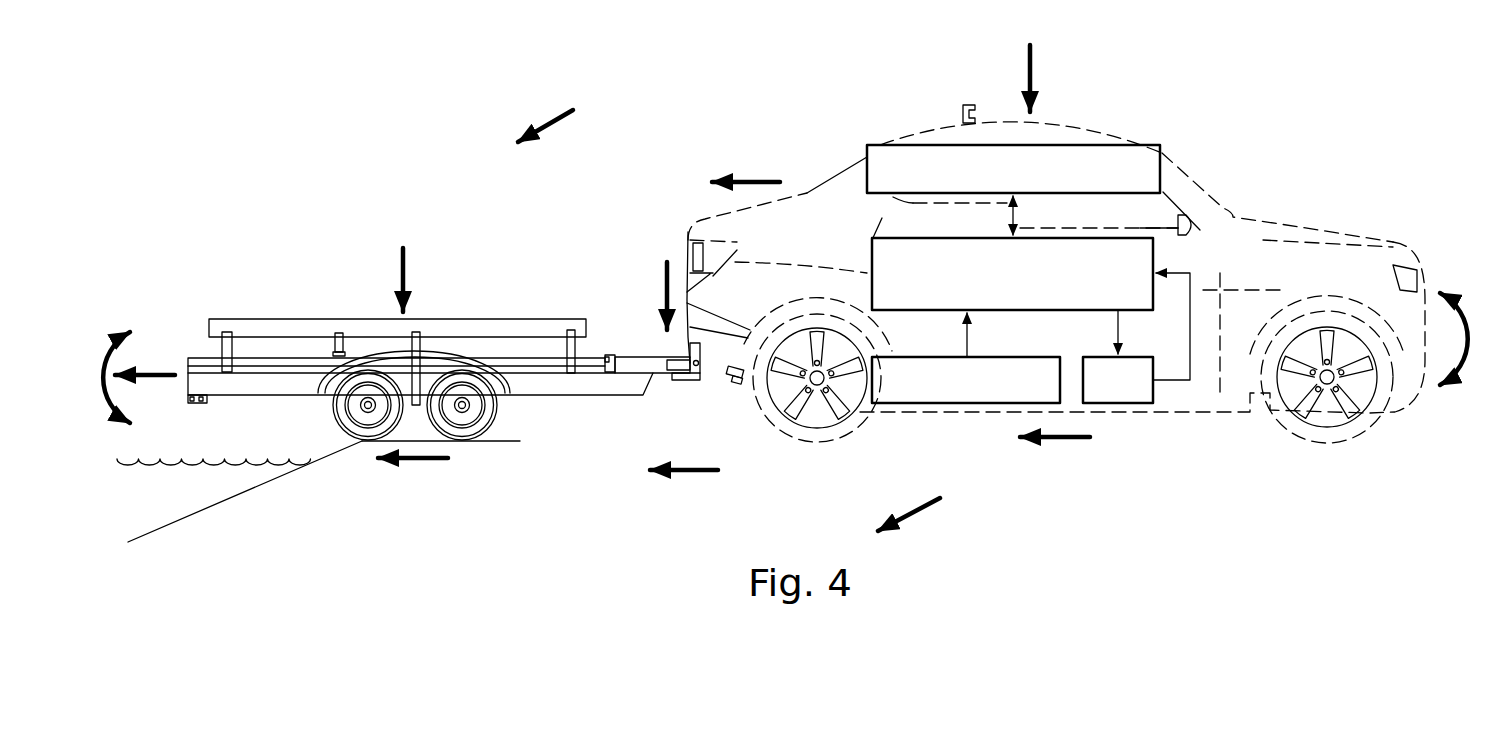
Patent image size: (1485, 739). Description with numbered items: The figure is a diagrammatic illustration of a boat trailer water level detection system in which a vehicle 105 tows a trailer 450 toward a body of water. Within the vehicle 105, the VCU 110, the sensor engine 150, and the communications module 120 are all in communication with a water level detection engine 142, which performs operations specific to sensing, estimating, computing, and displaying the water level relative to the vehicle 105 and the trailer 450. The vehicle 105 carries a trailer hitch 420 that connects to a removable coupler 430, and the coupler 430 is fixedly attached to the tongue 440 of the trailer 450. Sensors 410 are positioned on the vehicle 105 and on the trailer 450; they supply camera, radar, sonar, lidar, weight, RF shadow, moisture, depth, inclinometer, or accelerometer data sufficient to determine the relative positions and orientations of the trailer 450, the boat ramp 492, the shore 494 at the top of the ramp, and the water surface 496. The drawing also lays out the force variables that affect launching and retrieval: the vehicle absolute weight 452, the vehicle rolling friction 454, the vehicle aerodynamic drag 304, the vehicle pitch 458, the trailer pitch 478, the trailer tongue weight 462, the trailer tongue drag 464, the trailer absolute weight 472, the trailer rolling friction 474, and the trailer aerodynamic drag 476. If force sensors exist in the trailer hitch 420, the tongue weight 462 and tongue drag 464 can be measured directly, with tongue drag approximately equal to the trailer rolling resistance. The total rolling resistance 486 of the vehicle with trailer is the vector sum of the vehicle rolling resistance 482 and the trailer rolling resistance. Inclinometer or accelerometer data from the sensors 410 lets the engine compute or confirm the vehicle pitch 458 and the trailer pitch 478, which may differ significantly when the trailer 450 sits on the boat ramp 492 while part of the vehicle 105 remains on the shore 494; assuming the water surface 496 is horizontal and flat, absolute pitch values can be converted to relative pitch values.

The vehicle 105 is at (1175, 157).
The VCU 110 is at (1135, 404).
The communications module 120 is at (912, 144).
The water level detection engine 142 is at (1155, 262).
The sensor engine 150 is at (958, 404).
The vehicle aerodynamic drag 304 is at (749, 180).
The sensors 410 is at (207, 399).
The trailer hitch 420 is at (689, 381).
The removable coupler 430 is at (640, 356).
The tongue 440 is at (565, 396).
The trailer 450 is at (290, 318).
The vehicle absolute weight 452 is at (1036, 74).
The vehicle rolling friction 454 is at (1062, 441).
The vehicle pitch 458 is at (1462, 320).
The trailer tongue weight 462 is at (661, 288).
The trailer tongue drag 464 is at (680, 477).
The trailer absolute weight 472 is at (399, 275).
The trailer rolling friction 474 is at (412, 462).
The trailer aerodynamic drag 476 is at (160, 374).
The trailer pitch 478 is at (104, 350).
The vehicle rolling resistance 482 is at (916, 514).
The total rolling resistance 486 is at (548, 125).
The boat ramp 492 is at (227, 501).
The shore 494 is at (478, 439).
The water surface 496 is at (150, 467).